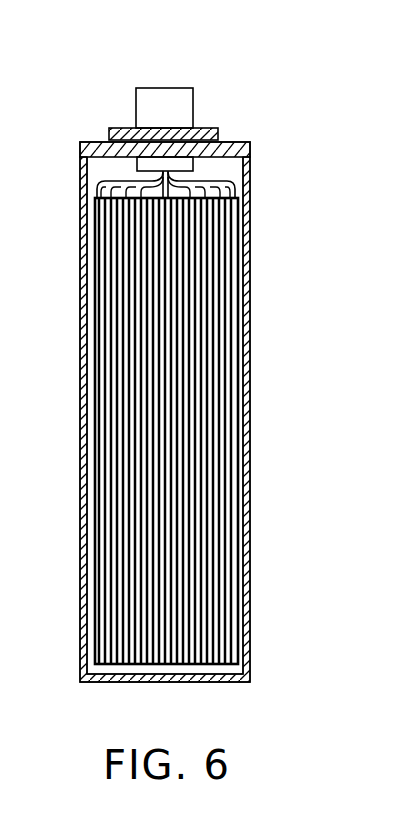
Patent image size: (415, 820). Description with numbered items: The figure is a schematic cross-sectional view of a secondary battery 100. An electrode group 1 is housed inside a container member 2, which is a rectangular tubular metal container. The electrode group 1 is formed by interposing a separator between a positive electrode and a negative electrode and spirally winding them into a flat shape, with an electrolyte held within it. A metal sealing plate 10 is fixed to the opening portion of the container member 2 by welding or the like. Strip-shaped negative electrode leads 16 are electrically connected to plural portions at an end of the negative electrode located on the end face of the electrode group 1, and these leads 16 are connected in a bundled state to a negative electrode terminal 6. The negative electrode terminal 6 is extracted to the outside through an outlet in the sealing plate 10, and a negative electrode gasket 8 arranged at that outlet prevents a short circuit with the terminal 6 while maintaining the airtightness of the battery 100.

The battery 100 is at (279, 60).
The electrode group 1 is at (173, 335).
The container member 2 is at (250, 245).
The negative electrode terminal 6 is at (193, 99).
The negative electrode gasket 8 is at (109, 133).
The sealing plate 10 is at (250, 148).
The negative electrode lead 16 is at (98, 193).